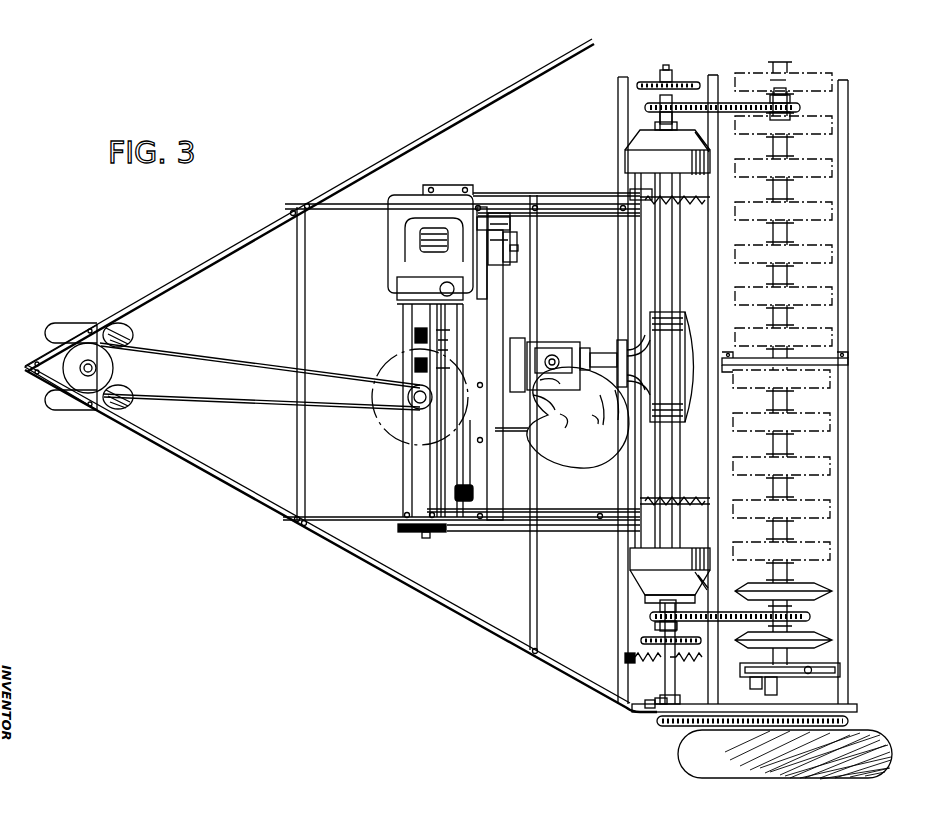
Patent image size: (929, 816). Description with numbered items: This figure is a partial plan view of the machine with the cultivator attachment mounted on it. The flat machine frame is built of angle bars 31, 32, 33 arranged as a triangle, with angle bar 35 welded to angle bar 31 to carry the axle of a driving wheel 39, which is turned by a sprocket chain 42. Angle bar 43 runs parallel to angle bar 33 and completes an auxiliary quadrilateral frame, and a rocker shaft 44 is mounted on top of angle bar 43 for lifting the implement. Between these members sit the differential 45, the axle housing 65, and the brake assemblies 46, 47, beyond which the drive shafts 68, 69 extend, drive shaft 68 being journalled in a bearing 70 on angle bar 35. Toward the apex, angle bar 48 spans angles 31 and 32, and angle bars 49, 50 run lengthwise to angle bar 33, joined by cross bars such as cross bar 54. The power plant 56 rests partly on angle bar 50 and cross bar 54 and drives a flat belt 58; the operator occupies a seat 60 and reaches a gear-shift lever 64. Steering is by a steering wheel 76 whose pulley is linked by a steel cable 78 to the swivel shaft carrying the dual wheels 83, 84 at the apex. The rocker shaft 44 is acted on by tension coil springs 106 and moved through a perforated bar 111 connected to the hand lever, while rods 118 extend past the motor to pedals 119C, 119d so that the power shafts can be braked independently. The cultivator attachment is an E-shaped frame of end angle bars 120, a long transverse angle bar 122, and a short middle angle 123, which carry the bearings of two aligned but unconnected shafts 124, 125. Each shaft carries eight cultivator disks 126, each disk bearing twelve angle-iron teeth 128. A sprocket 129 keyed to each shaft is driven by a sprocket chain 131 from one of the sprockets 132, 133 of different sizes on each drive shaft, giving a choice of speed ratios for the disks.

The angle bar 31 is at (198, 462).
The angle bar 32 is at (217, 258).
The angle bar 33 is at (620, 563).
The angle bar 35 is at (858, 707).
The driving wheel 39 is at (683, 752).
The sprocket chain 42 is at (680, 725).
The angle bar 43 is at (720, 153).
The rocker shaft 44 is at (715, 78).
The differential 45 is at (662, 334).
The brake assembly 46 is at (670, 575).
The brake assembly 47 is at (667, 135).
The angle bar 48 is at (295, 317).
The angle bar 49 is at (353, 520).
The angle bar 50 is at (348, 206).
The cross bar 54 is at (532, 242).
The power plant 56 is at (392, 237).
The flat belt 58 is at (493, 303).
The seat 60 is at (557, 462).
The gear-shift lever 64 is at (554, 357).
The axle housing 65 is at (658, 238).
The drive shaft 68 is at (675, 684).
The drive shaft 69 is at (657, 122).
The bearing 70 is at (630, 706).
The steering wheel 76 is at (382, 440).
The steel cable 78 is at (187, 356).
The dual wheel 83 is at (57, 328).
The dual wheel 84 is at (62, 411).
The coil spring 106 is at (628, 662).
The perforated bar 111 is at (493, 530).
The rod 118 is at (540, 193).
The pedal 119C is at (416, 334).
The pedal 119d is at (416, 358).
The angle bar 120 is at (827, 668).
The angle bar 122 is at (846, 568).
The short angle 123 is at (816, 357).
The shaft 124 is at (790, 402).
The shaft 125 is at (790, 275).
The cultivator disk 126 is at (810, 458).
The tooth 128 is at (822, 636).
The sprocket 129 is at (803, 107).
The sprocket chain 131 is at (736, 100).
The sprocket 132 is at (686, 81).
The sprocket 133 is at (648, 107).